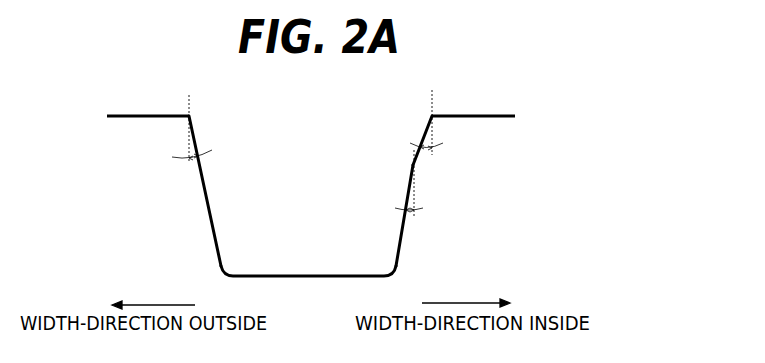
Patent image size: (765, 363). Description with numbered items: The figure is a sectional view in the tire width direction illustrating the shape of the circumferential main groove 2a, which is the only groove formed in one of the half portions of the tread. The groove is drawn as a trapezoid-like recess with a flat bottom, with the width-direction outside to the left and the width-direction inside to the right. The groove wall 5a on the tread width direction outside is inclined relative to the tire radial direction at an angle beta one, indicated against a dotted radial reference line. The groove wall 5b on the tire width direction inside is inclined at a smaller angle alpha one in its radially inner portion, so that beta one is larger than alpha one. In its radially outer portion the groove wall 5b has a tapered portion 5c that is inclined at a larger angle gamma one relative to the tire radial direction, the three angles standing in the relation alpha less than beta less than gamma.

The circumferential main groove 2a is at (325, 242).
The groove wall on the tread width direction outside 5a is at (216, 237).
The groove wall on the tire width direction inside 5b is at (401, 238).
The tapered portion 5c is at (426, 131).